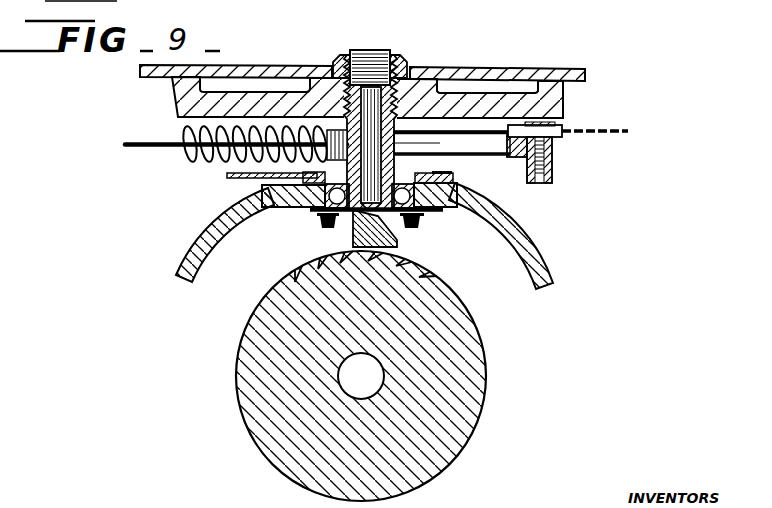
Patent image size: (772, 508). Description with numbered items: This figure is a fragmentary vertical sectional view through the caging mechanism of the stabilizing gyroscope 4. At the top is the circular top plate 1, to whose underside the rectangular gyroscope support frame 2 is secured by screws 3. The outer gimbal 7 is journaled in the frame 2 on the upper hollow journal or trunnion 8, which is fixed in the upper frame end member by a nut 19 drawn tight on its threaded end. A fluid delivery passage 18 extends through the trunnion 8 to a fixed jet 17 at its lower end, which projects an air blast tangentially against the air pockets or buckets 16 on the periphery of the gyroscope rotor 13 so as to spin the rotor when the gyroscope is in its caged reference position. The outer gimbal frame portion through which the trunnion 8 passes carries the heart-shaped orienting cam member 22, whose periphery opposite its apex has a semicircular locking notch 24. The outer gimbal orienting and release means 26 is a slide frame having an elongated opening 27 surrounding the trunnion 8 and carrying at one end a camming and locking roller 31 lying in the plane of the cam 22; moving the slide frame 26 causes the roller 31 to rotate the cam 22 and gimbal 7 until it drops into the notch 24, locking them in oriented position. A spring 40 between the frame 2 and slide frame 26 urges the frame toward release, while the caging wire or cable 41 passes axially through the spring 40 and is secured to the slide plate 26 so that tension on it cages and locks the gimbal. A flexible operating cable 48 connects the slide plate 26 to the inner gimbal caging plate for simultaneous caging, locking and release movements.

The circular top plate 1 is at (508, 72).
The gyroscope support frame 2 is at (175, 99).
The screws 3 is at (455, 96).
The stabilizing gyroscope 4 is at (374, 230).
The outer gimbal 7 is at (555, 265).
The upper journal or trunnion 8 is at (321, 65).
The gyroscope rotor 13 is at (455, 316).
The air pockets or buckets 16 is at (296, 272).
The fixed jet 17 is at (398, 237).
The fluid delivery passage 18 is at (347, 228).
The nut 19 is at (343, 33).
The heart-shaped orienting cam member 22 is at (233, 184).
The locking notch 24 is at (444, 200).
The outer gimbal orienting and release means 26 is at (504, 150).
The elongated opening 27 is at (469, 146).
The camming and locking roller 31 is at (553, 175).
The spring 40 is at (202, 156).
The caging wire or cable 41 is at (146, 142).
The flexible operating cable 48 is at (625, 130).